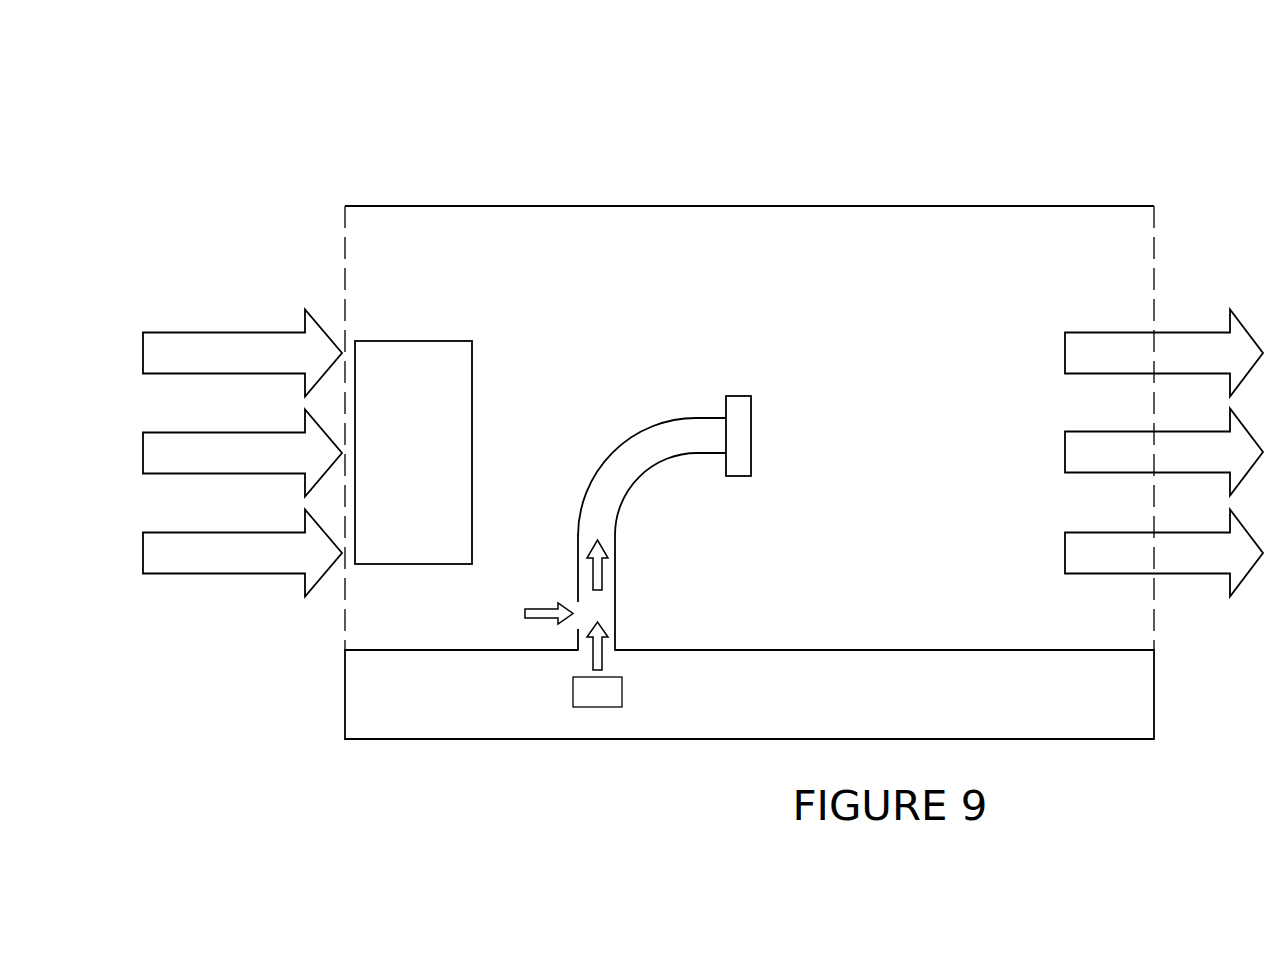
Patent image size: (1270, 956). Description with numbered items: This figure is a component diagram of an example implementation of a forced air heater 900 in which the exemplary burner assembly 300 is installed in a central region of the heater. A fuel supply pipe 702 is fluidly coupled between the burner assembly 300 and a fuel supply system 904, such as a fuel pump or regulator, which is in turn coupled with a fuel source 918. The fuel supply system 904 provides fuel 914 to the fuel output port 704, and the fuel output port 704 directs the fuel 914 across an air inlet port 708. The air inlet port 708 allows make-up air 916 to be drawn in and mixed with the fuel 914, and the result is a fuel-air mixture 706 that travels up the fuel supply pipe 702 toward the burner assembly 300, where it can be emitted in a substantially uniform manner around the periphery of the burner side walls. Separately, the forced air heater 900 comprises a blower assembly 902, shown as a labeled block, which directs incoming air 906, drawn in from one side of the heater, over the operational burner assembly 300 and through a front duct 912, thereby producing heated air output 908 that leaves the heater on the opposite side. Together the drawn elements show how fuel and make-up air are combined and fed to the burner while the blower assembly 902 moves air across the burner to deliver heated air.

The forced air heater 900 is at (313, 177).
The front duct 912 is at (808, 206).
The fuel source 918 is at (759, 708).
The incoming air 906 is at (197, 332).
The heated air output 908 is at (1172, 325).
The blower assembly 902 is at (419, 566).
The burner assembly 300 is at (742, 393).
The air inlet port 708 is at (577, 601).
The fuel supply pipe 702 is at (617, 599).
The fuel-air mixture 706 is at (603, 572).
The fuel 914 is at (588, 652).
The make-up air 916 is at (547, 607).
The fuel output port 704 is at (618, 658).
The fuel supply system 904 is at (616, 703).